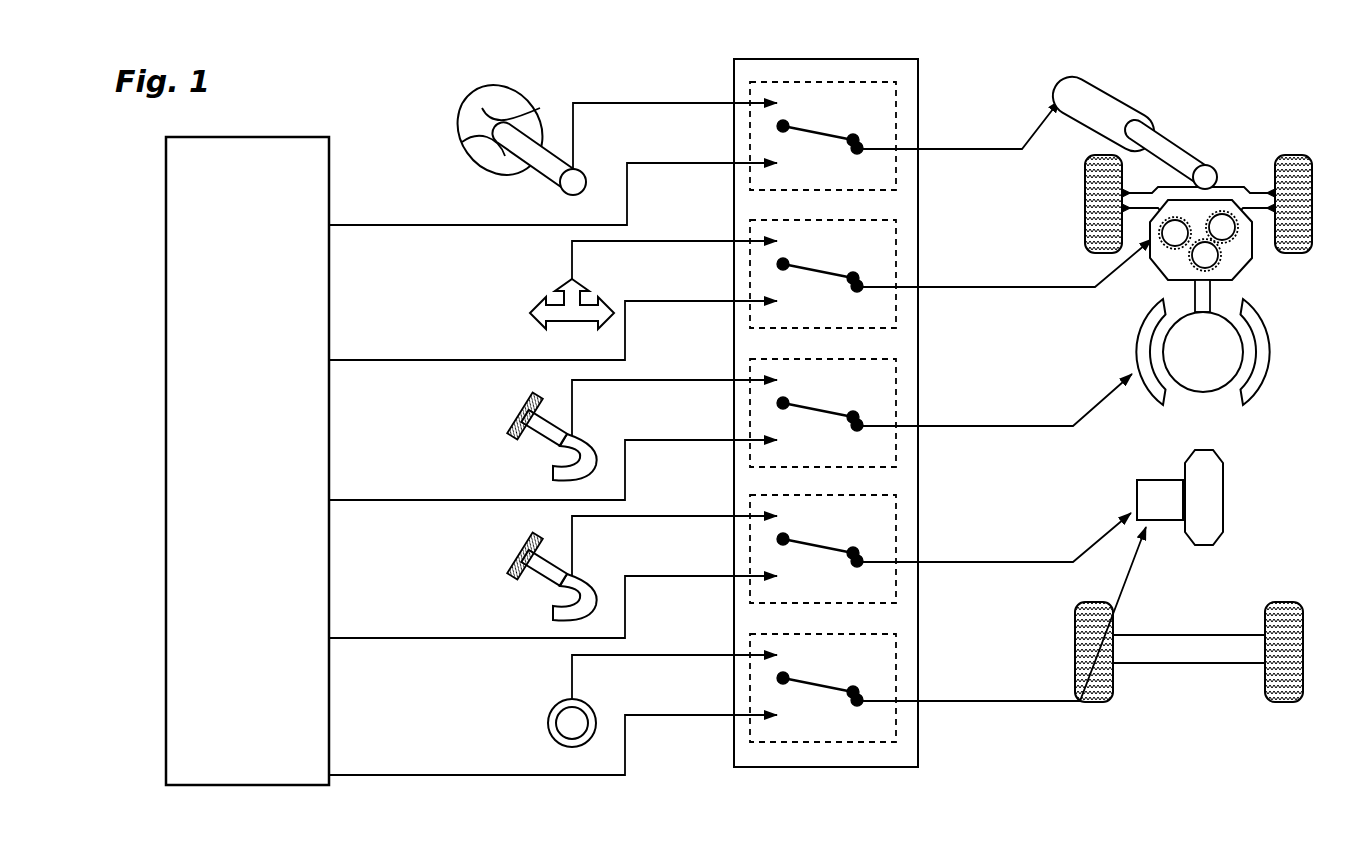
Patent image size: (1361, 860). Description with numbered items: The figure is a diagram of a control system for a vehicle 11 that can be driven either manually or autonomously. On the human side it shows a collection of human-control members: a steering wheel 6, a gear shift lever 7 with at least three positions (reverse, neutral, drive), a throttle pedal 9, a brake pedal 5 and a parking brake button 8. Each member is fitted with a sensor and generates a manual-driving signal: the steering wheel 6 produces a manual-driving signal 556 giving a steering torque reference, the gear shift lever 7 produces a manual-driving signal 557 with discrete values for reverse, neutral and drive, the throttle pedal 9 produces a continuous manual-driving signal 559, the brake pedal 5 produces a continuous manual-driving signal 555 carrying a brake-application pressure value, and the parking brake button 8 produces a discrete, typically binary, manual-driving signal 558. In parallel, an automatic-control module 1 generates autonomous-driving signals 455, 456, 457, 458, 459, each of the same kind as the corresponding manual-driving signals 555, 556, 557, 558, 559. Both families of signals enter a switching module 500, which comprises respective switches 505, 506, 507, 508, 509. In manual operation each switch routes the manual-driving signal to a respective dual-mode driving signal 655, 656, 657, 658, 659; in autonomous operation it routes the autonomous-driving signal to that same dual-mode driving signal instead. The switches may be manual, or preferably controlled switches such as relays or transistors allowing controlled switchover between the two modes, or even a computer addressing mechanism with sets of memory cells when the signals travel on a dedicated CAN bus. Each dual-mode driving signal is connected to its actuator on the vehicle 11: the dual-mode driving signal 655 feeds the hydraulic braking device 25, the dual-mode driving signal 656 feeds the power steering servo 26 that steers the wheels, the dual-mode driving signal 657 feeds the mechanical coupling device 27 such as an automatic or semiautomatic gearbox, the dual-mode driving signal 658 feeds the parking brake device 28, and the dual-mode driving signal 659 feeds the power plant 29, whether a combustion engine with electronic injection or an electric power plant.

The automatic-control module 1 is at (166, 272).
The brake pedal 5 is at (518, 576).
The steering wheel 6 is at (462, 141).
The gear shift lever 7 is at (545, 312).
The parking brake button 8 is at (549, 727).
The throttle pedal 9 is at (518, 416).
The vehicle 11 is at (1226, 91).
The hydraulic braking device 25 is at (1222, 460).
The power steering servo 26 is at (1117, 72).
The mechanical coupling device 27 is at (1256, 262).
The parking brake device 28 is at (1140, 480).
The power plant 29 is at (1268, 382).
The autonomous-driving signal 455 is at (372, 638).
The autonomous-driving signal 456 is at (372, 225).
The autonomous-driving signal 457 is at (372, 360).
The autonomous-driving signal 458 is at (372, 775).
The autonomous-driving signal 459 is at (372, 500).
The switching module 500 is at (918, 74).
The switch 505 is at (896, 603).
The switch 506 is at (896, 190).
The switch 507 is at (896, 328).
The switch 508 is at (896, 742).
The switch 509 is at (896, 467).
The manual-driving signal 555 is at (658, 516).
The manual-driving signal 556 is at (625, 103).
The manual-driving signal 557 is at (665, 241).
The manual-driving signal 558 is at (658, 655).
The manual-driving signal 559 is at (658, 380).
The dual-mode driving signal 655 is at (1035, 562).
The dual-mode driving signal 656 is at (988, 149).
The dual-mode driving signal 657 is at (1018, 287).
The dual-mode driving signal 658 is at (1012, 701).
The dual-mode driving signal 659 is at (1035, 426).